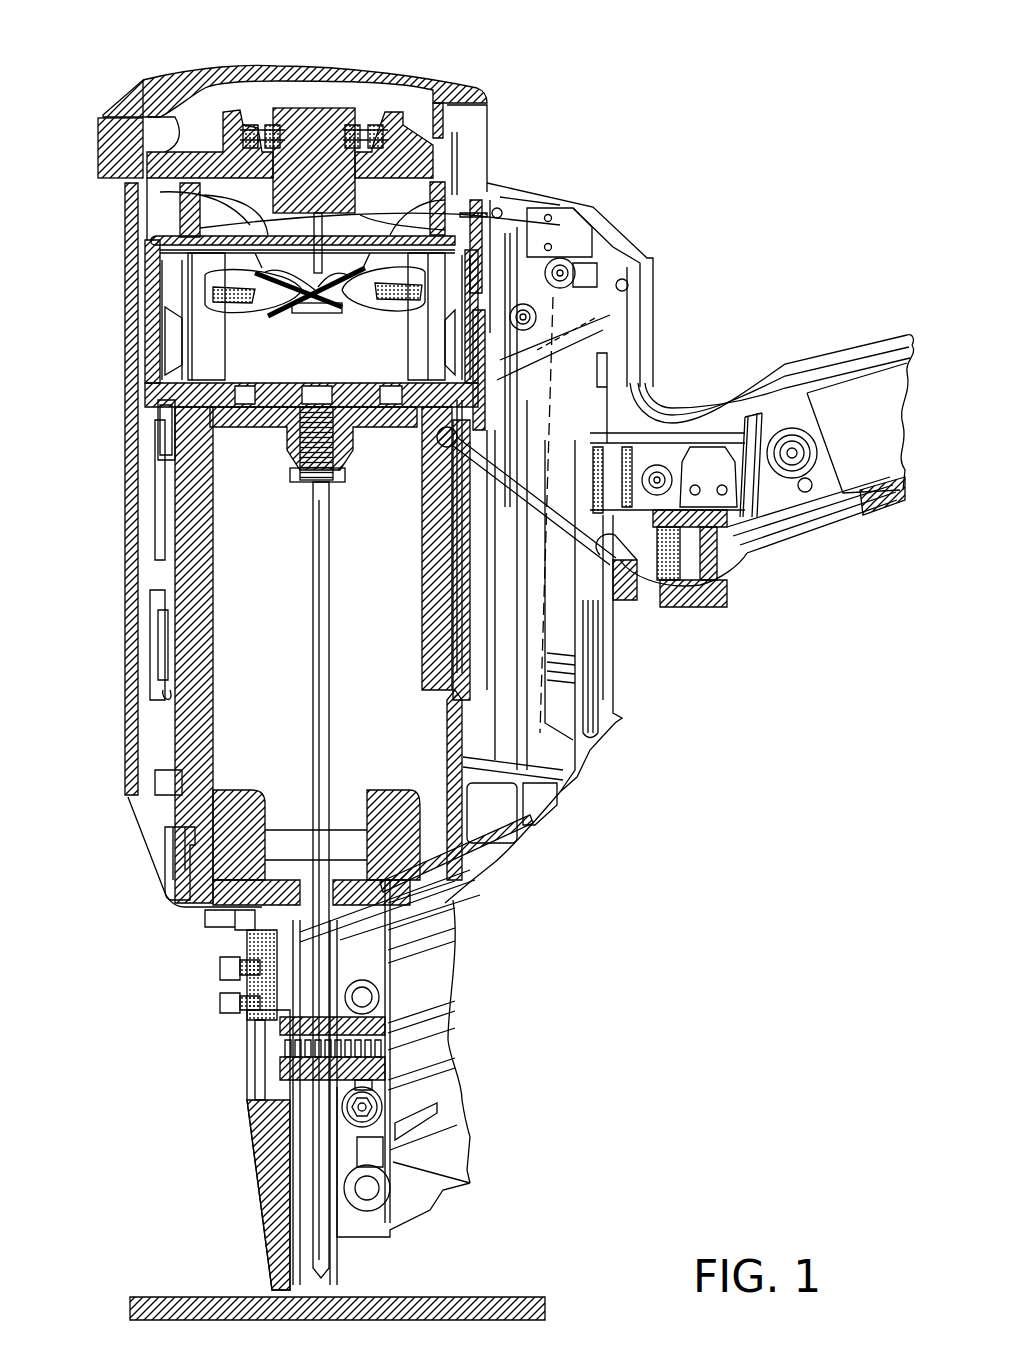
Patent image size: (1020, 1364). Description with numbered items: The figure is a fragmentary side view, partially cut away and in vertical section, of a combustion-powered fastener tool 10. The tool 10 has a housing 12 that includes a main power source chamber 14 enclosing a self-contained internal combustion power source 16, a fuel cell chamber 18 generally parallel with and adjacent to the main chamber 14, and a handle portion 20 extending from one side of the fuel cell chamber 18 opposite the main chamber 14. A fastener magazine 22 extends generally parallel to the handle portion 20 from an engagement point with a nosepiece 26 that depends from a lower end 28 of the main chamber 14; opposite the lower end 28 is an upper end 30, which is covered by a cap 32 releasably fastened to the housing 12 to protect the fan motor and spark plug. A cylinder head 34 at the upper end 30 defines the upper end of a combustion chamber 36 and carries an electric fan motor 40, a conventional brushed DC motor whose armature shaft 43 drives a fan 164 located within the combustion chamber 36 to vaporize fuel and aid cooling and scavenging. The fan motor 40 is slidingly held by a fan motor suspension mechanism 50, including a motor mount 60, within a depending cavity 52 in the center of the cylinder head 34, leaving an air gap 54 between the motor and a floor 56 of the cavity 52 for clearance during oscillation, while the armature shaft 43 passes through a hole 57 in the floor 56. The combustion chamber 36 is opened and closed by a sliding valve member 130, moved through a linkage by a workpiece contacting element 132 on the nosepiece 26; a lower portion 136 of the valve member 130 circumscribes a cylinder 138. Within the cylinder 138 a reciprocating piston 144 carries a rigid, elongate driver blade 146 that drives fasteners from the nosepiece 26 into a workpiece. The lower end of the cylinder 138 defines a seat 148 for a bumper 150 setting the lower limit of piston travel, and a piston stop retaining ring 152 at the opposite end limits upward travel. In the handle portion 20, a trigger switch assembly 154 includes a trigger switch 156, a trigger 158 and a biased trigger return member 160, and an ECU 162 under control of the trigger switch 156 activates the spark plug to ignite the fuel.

The combustion-powered tool 10 is at (628, 148).
The housing 12 is at (648, 300).
The main power source chamber 14 is at (140, 300).
The internal combustion power source 16 is at (165, 357).
The fuel cell chamber 18 is at (573, 413).
The handle portion 20 is at (836, 545).
The fastener magazine 22 is at (440, 1080).
The nosepiece 26 is at (272, 1140).
The lower end 28 is at (240, 950).
The upper end 30 is at (460, 205).
The cap 32 is at (410, 72).
The cylinder head 34 is at (100, 120).
The combustion chamber 36 is at (168, 272).
The fan motor 40 is at (295, 110).
The armature shaft 43 is at (303, 284).
The fan motor suspension mechanism 50 is at (326, 105).
The depending cavity 52 is at (180, 193).
The air gap 54 is at (428, 224).
The floor 56 is at (545, 208).
The hole 57 is at (152, 240).
The motor mount 60 is at (370, 120).
The valve member 130 is at (158, 447).
The workpiece contacting element 132 is at (262, 1215).
The lower portion 136 is at (128, 525).
The cylinder 138 is at (215, 572).
The piston 144 is at (272, 440).
The driver blade 146 is at (330, 700).
The seat 148 is at (470, 892).
The bumper 150 is at (482, 858).
The piston stop retaining ring 152 is at (150, 415).
The trigger switch assembly 154 is at (665, 603).
The trigger switch 156 is at (738, 505).
The trigger 158 is at (705, 608).
The trigger return member 160 is at (652, 600).
The ECU 162 is at (868, 495).
The fan 164 is at (240, 305).